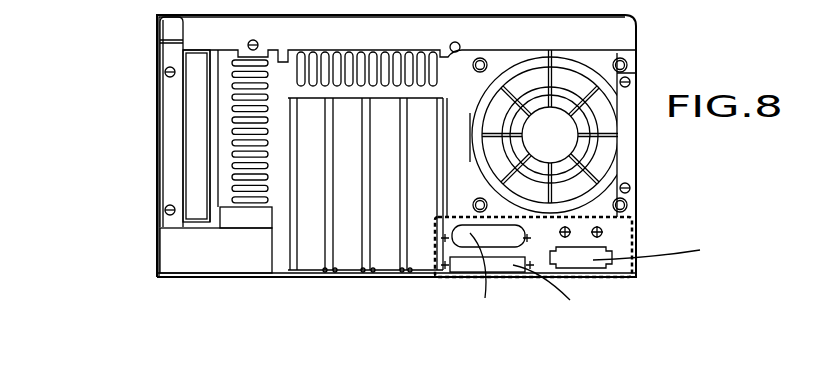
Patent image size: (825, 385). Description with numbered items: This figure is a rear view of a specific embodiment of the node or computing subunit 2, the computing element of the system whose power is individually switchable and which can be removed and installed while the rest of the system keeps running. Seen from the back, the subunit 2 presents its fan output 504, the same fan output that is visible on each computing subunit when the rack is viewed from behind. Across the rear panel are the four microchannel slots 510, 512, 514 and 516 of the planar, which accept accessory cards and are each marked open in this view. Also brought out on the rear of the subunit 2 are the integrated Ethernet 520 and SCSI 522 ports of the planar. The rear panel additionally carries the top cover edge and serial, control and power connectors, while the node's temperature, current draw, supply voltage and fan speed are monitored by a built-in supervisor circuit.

The computing subunit 2 is at (150, 160).
The fan output 504 is at (603, 148).
The microchannel slot 510 is at (313, 255).
The microchannel slot 512 is at (348, 255).
The microchannel slot 514 is at (381, 255).
The microchannel slot 516 is at (416, 255).
The integrated Ethernet port 520 is at (195, 95).
The integrated SCSI port 522 is at (195, 252).